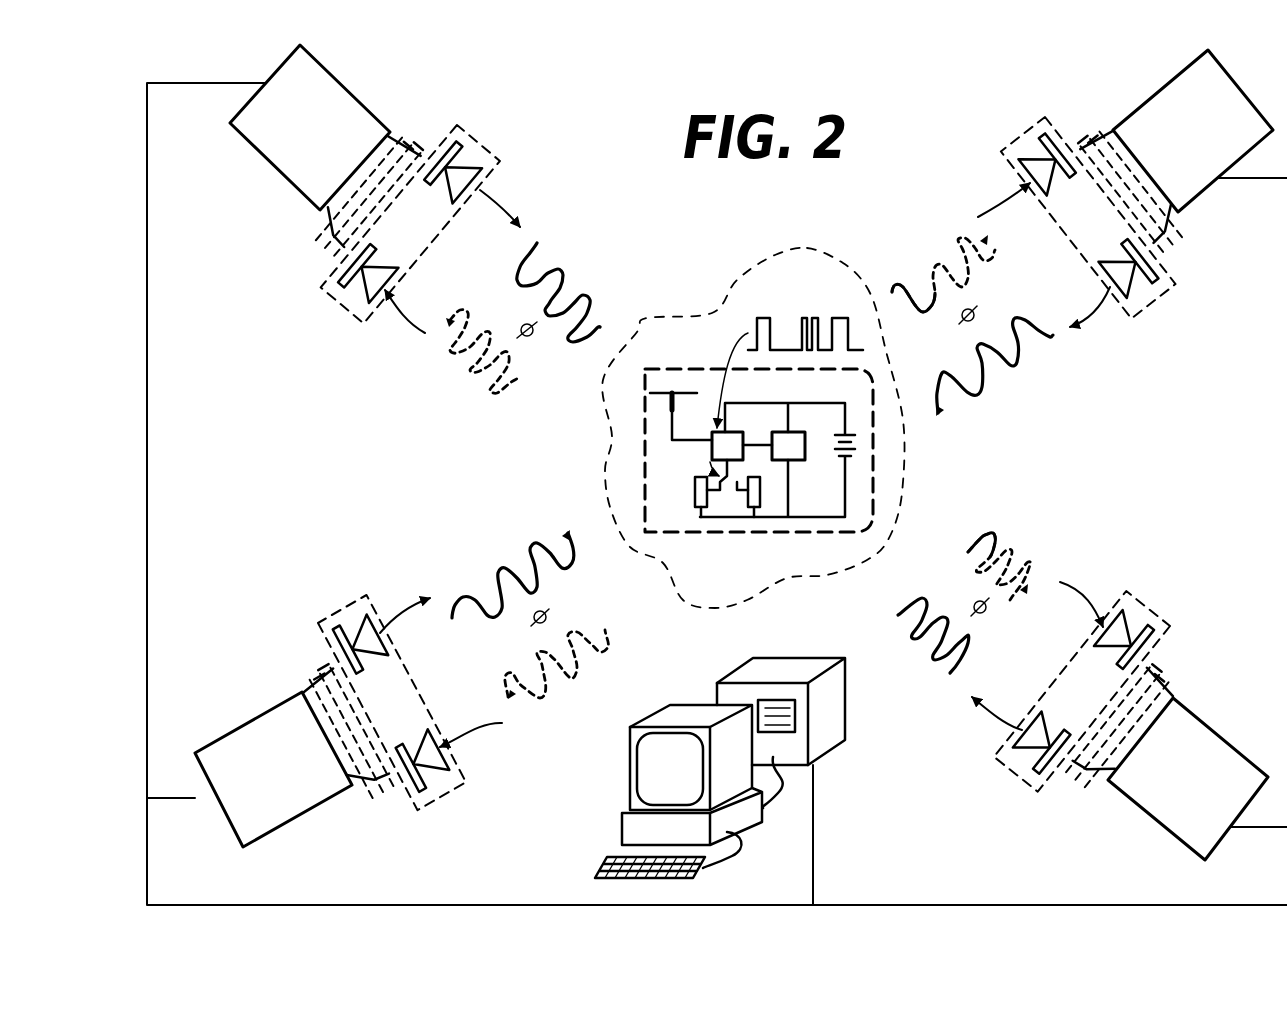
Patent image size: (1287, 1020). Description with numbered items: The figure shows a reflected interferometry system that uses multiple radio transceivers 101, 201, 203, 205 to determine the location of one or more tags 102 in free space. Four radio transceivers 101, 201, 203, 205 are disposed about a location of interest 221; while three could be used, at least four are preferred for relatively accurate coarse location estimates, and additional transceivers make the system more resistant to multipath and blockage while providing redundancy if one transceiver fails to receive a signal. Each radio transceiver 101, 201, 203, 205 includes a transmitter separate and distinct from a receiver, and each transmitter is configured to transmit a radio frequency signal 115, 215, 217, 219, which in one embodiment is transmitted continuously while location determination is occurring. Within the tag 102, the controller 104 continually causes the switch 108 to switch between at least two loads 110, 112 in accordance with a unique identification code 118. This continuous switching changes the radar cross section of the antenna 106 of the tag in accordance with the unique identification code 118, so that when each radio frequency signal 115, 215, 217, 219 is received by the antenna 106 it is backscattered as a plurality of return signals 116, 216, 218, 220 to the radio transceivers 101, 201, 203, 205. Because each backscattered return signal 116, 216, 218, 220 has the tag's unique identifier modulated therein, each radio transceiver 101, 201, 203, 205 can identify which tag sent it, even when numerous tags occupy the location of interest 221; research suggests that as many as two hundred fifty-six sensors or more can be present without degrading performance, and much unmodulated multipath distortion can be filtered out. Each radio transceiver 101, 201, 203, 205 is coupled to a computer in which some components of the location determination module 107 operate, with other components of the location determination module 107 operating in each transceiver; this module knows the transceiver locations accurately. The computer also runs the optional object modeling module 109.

The radio transceiver 101 is at (262, 713).
The radio transceiver 201 is at (357, 92).
The radio transceiver 203 is at (1153, 93).
The radio transceiver 205 is at (1198, 715).
The tag 102 is at (697, 370).
The controller 104 is at (795, 448).
The antenna 106 is at (690, 398).
The switch 108 is at (732, 437).
The load 110 is at (696, 493).
The load 112 is at (762, 493).
The radio frequency signal 115 is at (500, 568).
The return signal 116 is at (605, 630).
The unique identification code 118 is at (765, 317).
The radio frequency signal 215 is at (582, 313).
The return signal 216 is at (515, 380).
The radio frequency signal 217 is at (995, 362).
The return signal 218 is at (995, 258).
The radio frequency signal 219 is at (910, 638).
The return signal 220 is at (997, 535).
The location of interest 221 is at (787, 253).
The location determination module 107 is at (815, 734).
The object modeling module 109 is at (823, 717).